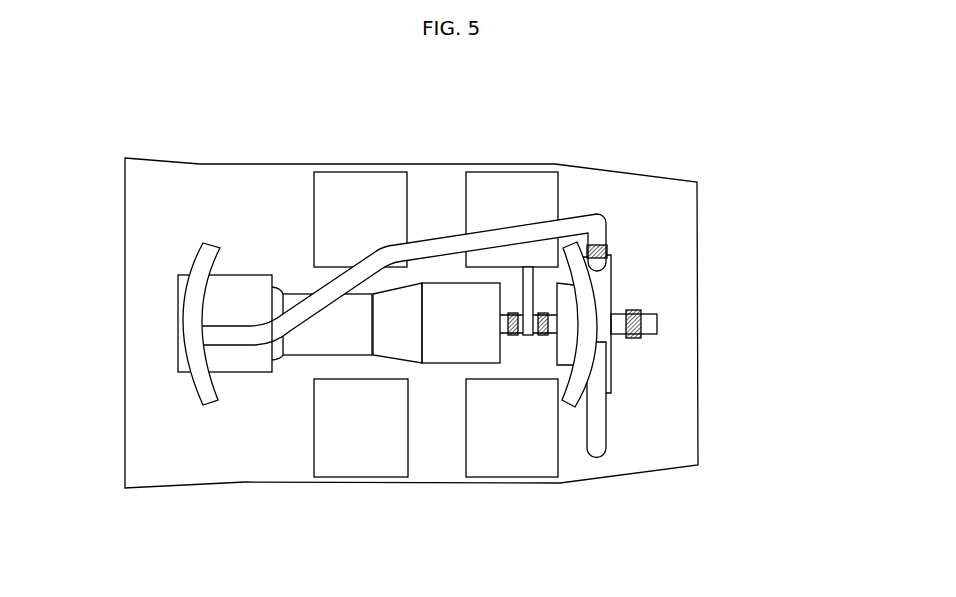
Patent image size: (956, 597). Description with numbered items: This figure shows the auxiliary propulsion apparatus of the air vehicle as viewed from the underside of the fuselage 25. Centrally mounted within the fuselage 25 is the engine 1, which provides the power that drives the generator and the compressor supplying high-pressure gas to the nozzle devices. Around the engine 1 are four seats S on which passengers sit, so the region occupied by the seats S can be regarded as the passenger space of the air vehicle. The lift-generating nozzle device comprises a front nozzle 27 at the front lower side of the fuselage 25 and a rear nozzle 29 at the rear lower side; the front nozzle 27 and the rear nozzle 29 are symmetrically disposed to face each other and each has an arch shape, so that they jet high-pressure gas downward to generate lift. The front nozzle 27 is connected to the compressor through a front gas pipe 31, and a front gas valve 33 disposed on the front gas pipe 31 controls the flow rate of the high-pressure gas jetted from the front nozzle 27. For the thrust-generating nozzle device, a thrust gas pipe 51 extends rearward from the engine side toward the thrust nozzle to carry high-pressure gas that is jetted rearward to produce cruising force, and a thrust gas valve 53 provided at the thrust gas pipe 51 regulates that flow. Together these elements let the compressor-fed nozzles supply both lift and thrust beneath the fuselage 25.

The engine 1 is at (446, 347).
The fuselage 25 is at (192, 468).
The front nozzle 27 is at (207, 250).
The rear nozzle 29 is at (583, 367).
The front gas pipe 31 is at (438, 243).
The front gas valve 33 is at (608, 250).
The thrust gas pipe 51 is at (652, 325).
The thrust gas valve 53 is at (636, 308).
The seats S is at (357, 462).